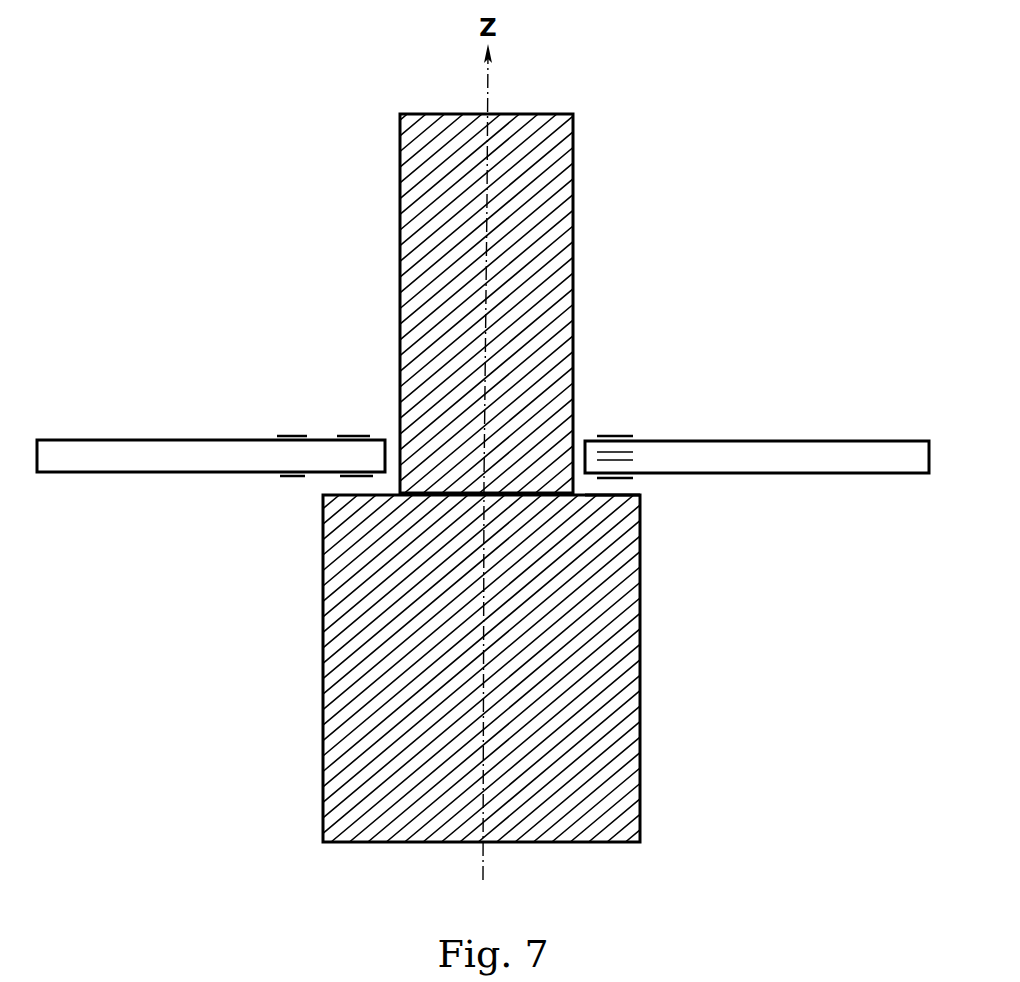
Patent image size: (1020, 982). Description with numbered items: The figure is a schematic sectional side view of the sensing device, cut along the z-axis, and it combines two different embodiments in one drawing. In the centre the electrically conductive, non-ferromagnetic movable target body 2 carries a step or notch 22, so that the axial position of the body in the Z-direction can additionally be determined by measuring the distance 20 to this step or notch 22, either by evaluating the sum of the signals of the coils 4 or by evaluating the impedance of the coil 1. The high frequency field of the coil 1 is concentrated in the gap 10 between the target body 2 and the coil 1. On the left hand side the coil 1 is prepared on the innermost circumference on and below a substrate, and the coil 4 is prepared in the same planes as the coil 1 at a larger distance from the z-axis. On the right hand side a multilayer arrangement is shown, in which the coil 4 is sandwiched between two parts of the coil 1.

The coil 1 is at (362, 437).
The target body 2 is at (540, 205).
The magnetic field sensor coil 4 is at (292, 473).
The gap 10 is at (577, 453).
The distance 20 is at (642, 494).
The step or notch 22 is at (367, 608).